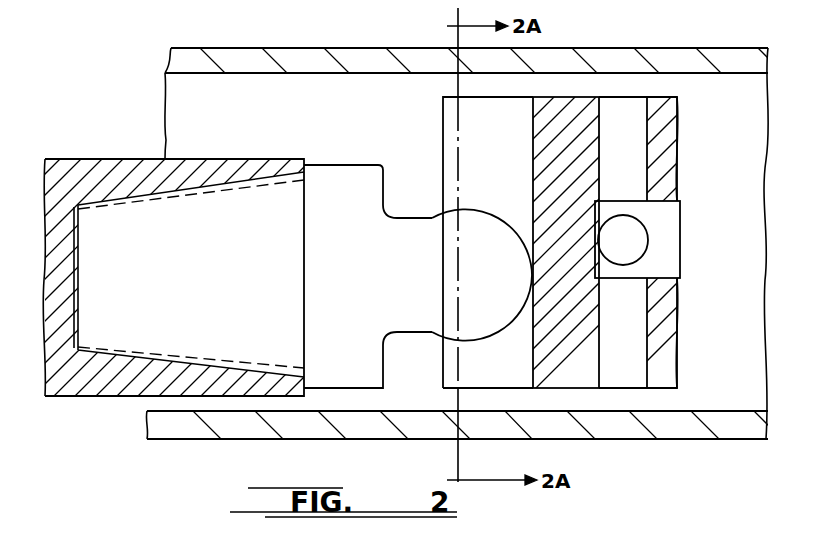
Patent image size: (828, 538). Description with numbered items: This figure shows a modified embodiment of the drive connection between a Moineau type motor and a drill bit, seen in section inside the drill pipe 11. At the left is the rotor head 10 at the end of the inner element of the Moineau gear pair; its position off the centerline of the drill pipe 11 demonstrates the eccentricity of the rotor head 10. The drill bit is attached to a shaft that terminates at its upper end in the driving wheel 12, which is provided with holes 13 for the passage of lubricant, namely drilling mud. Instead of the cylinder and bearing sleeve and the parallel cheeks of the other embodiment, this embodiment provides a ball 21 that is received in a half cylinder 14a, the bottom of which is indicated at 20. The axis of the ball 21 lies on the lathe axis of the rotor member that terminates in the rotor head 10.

The rotor head 10 is at (117, 160).
The drill pipe 11 is at (491, 56).
The driving wheel 12 is at (595, 121).
The holes 13 is at (635, 151).
The half cylinder 14a is at (452, 123).
The bottom of the half cylinder 20 is at (531, 343).
The ball 21 is at (482, 216).